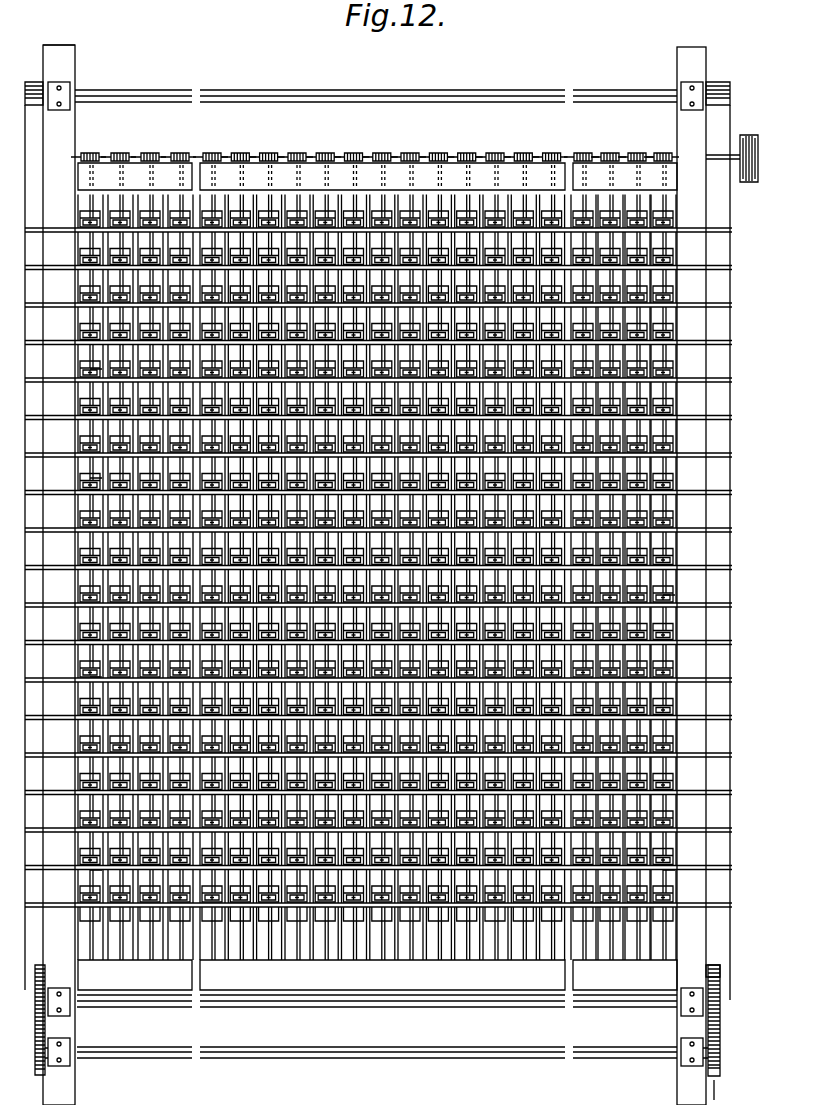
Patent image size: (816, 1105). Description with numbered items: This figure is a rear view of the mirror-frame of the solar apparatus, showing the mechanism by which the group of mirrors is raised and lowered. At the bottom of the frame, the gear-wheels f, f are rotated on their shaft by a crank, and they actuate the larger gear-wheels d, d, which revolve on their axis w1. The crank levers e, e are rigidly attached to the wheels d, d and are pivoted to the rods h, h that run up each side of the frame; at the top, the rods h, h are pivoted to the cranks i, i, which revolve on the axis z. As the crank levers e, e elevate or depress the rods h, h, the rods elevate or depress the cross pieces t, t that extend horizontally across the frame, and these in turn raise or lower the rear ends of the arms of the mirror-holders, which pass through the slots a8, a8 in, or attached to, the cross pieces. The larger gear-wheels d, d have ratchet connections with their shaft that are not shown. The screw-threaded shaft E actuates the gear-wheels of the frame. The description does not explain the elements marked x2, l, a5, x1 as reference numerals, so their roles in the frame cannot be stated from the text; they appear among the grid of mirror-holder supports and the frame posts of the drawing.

The cross pieces t is at (74, 272).
The type boxes x2 is at (115, 224).
The screw-threaded shaft E is at (258, 154).
The axis z is at (375, 90).
The cranks i is at (30, 90).
The rods h is at (25, 327).
The post l is at (75, 70).
The slots a8 is at (78, 368).
The vertical bar a5 is at (78, 672).
The lower shaft x1 is at (178, 660).
The axis w1 is at (375, 1007).
The crank levers e is at (35, 1012).
The larger gear-wheels d is at (720, 974).
The gear-wheels f is at (35, 1060).